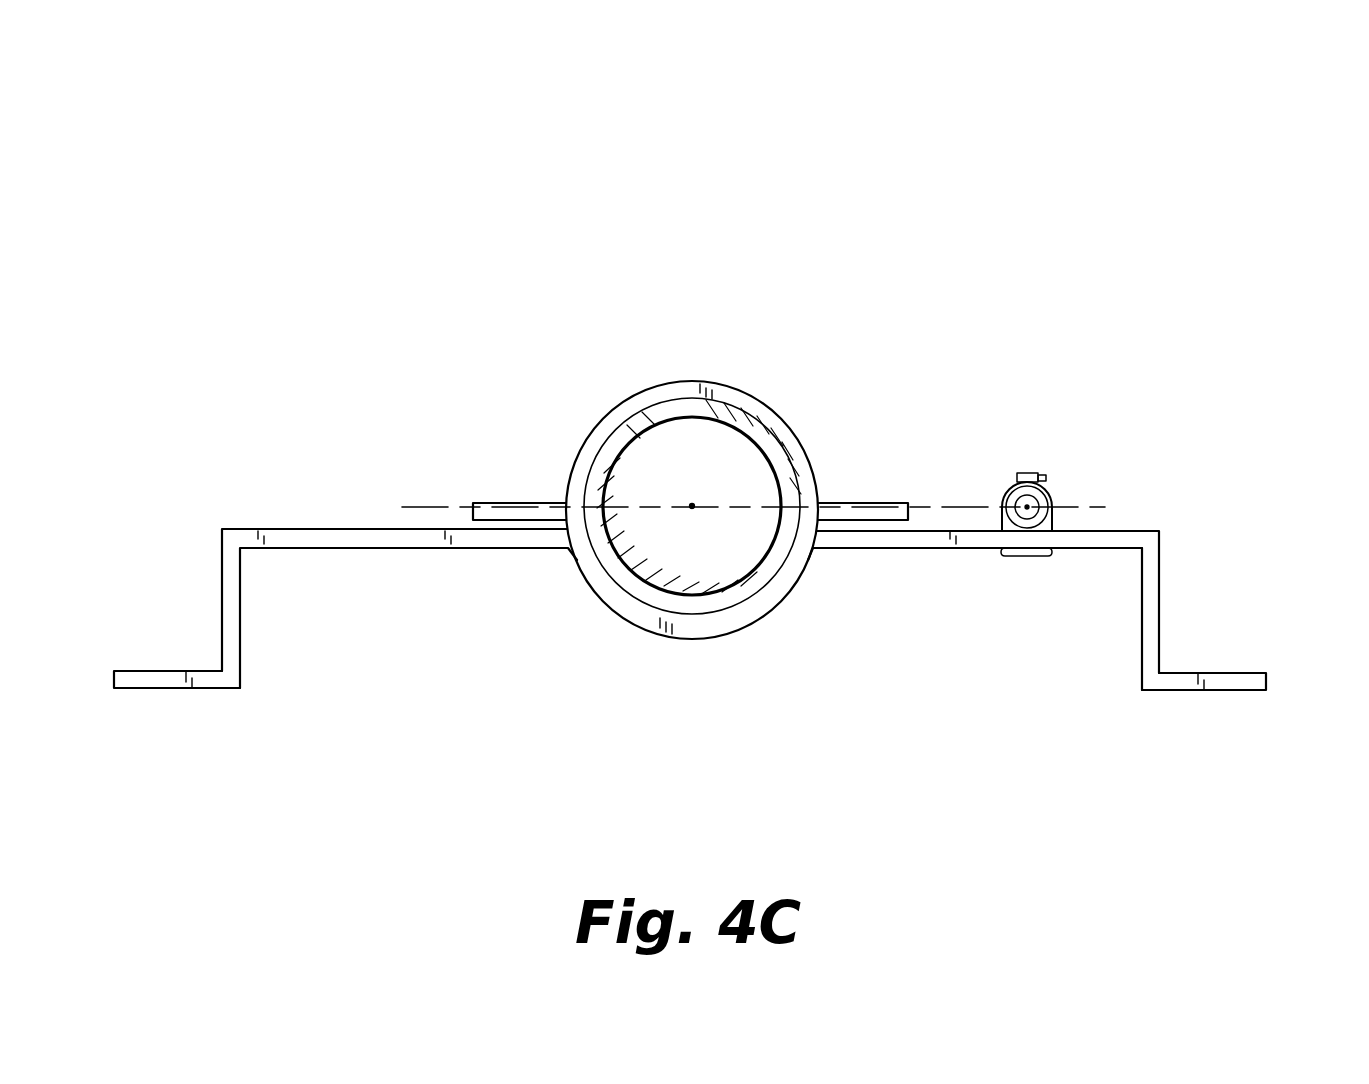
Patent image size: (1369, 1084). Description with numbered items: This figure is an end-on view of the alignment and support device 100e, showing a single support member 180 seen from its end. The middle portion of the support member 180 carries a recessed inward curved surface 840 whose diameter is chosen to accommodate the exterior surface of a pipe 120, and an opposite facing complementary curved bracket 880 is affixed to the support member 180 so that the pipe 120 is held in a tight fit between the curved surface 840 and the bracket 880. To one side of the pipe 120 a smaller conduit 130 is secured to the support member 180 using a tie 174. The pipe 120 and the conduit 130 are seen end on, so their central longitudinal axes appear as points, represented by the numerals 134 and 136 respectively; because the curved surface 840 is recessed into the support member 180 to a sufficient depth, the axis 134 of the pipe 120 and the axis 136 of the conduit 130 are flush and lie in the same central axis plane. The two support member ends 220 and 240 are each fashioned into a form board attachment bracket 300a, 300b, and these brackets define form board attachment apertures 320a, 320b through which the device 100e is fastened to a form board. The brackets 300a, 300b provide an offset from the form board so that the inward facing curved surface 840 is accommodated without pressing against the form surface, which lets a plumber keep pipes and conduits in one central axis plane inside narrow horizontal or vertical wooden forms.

The device 100e is at (375, 156).
The pipe 120 is at (752, 400).
The conduit 130 is at (1000, 492).
The central longitudinal axis of pipe 134 is at (692, 506).
The central longitudinal axis of conduit 136 is at (1030, 473).
The tie 174 is at (1058, 482).
The first support member 180 is at (876, 550).
The support member end 220 is at (331, 550).
The support member end 240 is at (1098, 552).
The form board attachment bracket 300a is at (222, 578).
The form board attachment bracket 300b is at (1160, 598).
The form board attachment aperture 320a is at (140, 690).
The form board attachment aperture 320b is at (1238, 692).
The recessed inward curved surface 840 is at (712, 583).
The curved bracket 880 is at (592, 423).